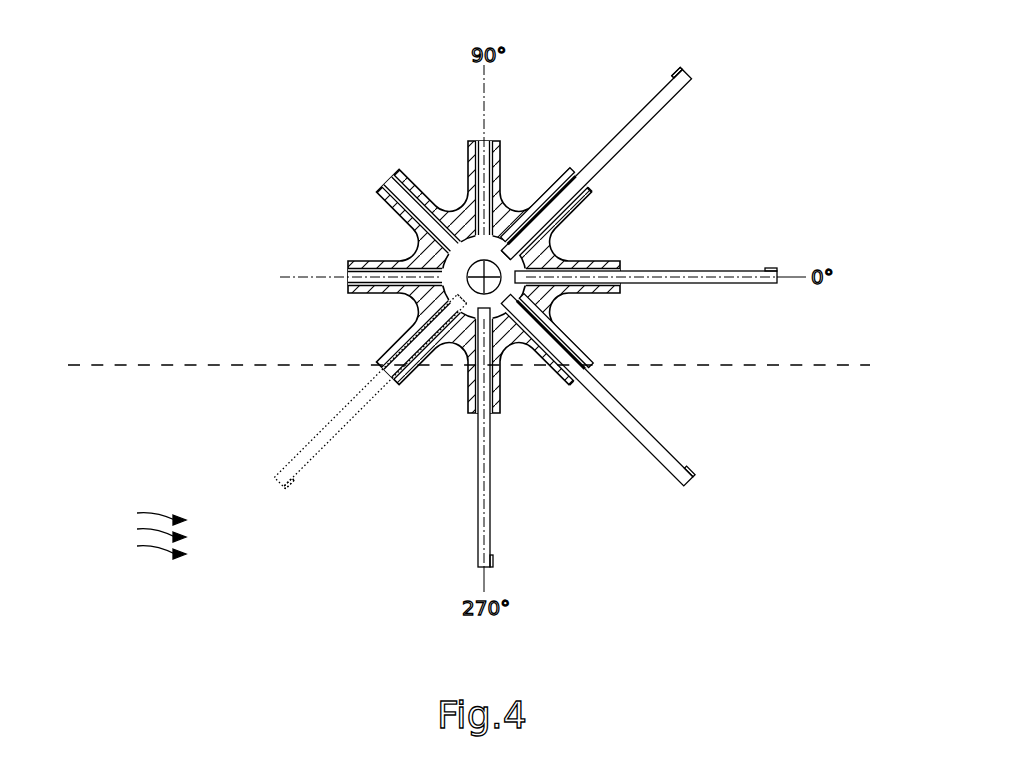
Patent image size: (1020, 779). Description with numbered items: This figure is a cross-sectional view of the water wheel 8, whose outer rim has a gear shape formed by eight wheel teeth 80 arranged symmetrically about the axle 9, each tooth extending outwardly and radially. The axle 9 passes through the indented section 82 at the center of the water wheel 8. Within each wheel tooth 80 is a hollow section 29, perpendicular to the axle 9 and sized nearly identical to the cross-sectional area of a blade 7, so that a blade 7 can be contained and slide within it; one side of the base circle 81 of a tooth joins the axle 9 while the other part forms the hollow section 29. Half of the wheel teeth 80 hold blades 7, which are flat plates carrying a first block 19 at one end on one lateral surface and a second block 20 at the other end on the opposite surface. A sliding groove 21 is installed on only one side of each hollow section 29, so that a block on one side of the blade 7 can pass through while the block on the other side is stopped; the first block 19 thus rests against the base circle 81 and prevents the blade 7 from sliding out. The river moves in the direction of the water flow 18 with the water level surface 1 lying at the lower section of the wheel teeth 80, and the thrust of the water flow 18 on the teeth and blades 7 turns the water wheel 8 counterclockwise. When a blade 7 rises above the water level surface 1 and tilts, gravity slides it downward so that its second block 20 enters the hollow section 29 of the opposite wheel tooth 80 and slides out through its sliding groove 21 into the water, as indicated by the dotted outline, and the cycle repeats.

The water level surface 1 is at (158, 365).
The blade 7 is at (672, 96).
The water wheel 8 is at (355, 138).
The axle 9 is at (498, 287).
The water flow 18 is at (145, 536).
The first block 19 is at (683, 62).
The second block 20 is at (530, 250).
The sliding groove 21 is at (472, 145).
The hollow section 29 is at (486, 141).
The wheel tooth 80 is at (553, 186).
The base circle 81 is at (440, 265).
The indented section 82 is at (458, 237).